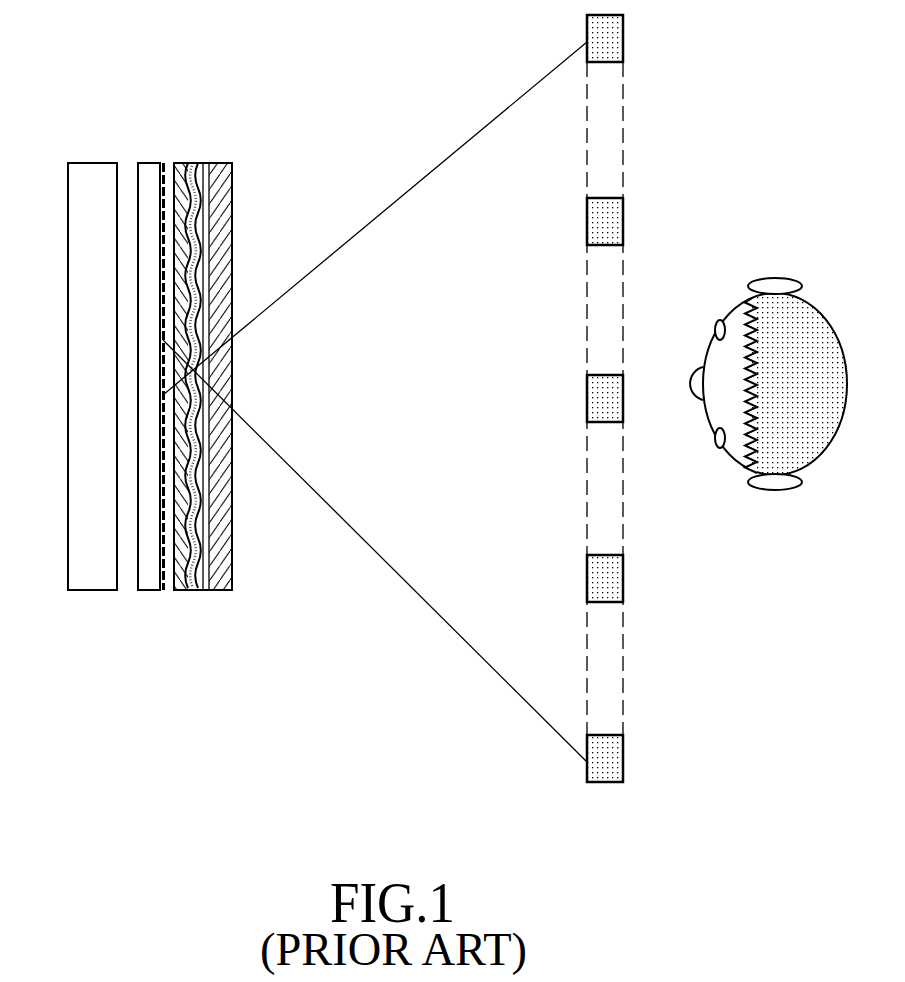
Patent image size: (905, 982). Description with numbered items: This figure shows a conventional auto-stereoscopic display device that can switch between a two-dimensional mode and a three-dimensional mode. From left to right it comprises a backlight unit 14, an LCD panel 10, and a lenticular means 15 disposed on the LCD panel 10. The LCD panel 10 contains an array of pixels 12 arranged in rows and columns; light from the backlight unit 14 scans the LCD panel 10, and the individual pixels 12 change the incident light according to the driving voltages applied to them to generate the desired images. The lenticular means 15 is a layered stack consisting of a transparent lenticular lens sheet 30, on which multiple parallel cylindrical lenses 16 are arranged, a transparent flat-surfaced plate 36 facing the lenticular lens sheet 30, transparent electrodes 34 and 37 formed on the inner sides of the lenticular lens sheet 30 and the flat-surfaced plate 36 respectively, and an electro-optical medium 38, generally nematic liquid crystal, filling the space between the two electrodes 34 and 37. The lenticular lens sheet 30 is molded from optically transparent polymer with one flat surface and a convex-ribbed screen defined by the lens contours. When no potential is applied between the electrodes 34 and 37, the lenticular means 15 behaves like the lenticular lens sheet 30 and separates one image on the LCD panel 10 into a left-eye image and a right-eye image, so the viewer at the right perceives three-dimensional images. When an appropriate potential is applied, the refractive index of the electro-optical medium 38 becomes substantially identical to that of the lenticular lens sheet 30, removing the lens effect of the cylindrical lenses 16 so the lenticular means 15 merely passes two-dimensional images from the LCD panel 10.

The LCD panel 10 is at (152, 173).
The pixels 12 is at (162, 288).
The backlight unit 14 is at (88, 173).
The lenticular means 15 is at (227, 380).
The cylindrical lenses 16 is at (193, 214).
The lenticular lens sheet 30 is at (178, 590).
The transparent electrode 34 is at (252, 420).
The flat-surfaced plate 36 is at (232, 173).
The transparent electrode 37 is at (204, 590).
The electro-optical medium 38 is at (198, 195).